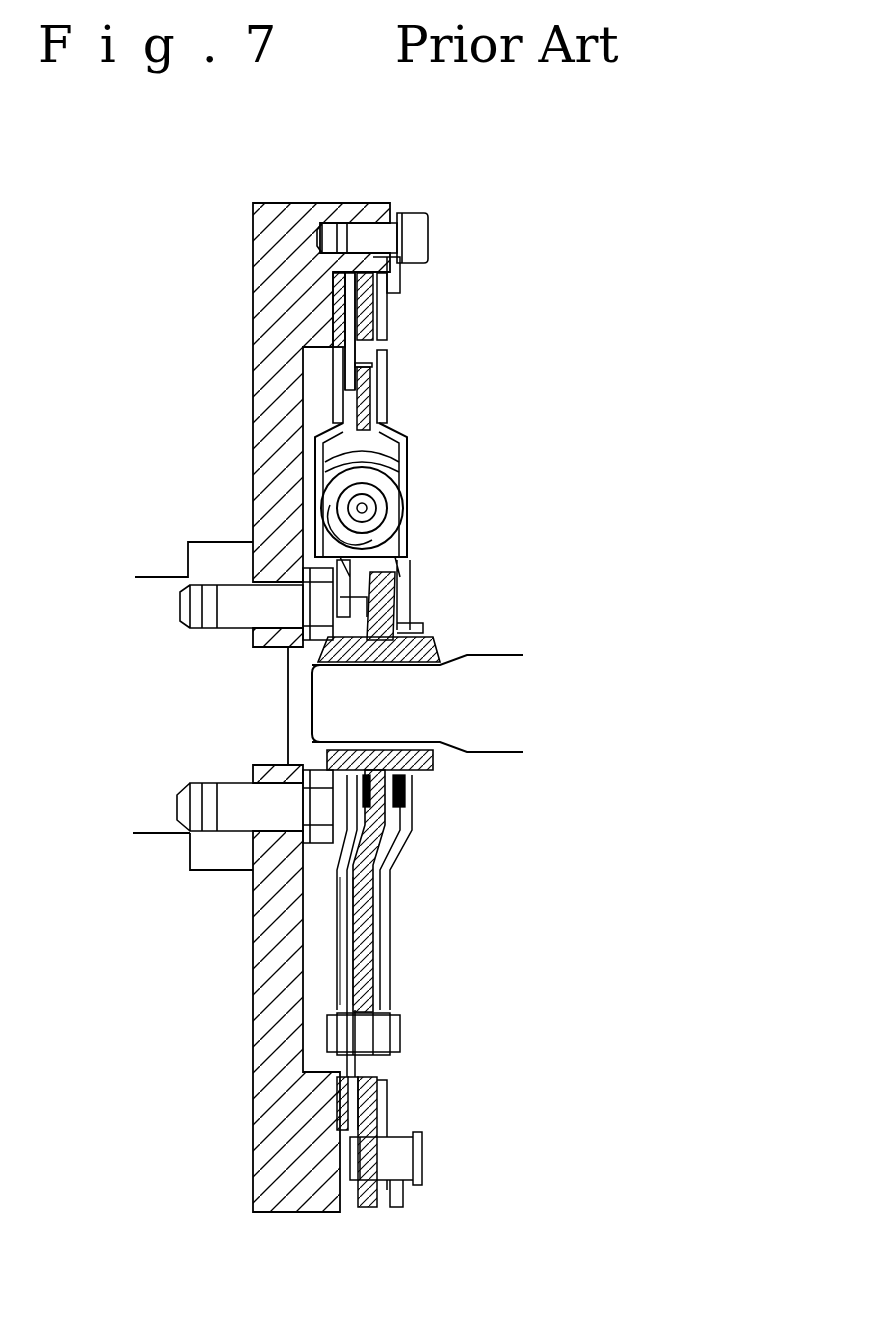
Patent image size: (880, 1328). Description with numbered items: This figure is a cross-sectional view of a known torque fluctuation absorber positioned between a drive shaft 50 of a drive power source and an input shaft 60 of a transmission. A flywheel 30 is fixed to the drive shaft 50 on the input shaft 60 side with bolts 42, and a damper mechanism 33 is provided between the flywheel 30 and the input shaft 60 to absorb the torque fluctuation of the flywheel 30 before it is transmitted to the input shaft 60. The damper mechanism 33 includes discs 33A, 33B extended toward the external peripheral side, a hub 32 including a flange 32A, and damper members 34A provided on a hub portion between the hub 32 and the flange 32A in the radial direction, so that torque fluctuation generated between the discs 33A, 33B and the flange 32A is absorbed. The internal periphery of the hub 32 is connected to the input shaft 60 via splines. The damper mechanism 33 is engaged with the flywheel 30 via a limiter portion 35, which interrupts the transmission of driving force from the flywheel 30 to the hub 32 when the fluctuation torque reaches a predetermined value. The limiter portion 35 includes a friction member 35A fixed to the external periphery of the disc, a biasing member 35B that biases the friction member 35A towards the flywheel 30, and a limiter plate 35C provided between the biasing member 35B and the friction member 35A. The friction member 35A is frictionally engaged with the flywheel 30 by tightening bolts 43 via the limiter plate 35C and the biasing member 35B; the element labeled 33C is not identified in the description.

The flywheel 30 is at (280, 265).
The bolts 43 is at (417, 240).
The limiter plate 35C is at (367, 290).
The limiter portion 35 is at (403, 307).
The biasing member 35B is at (379, 320).
The friction member 35A is at (345, 303).
The plate portion of arm 33C is at (345, 367).
The disc 33B is at (360, 397).
The damper mechanism 33 is at (400, 395).
The disc 33A is at (387, 407).
The damper member 34A is at (393, 517).
The drive shaft 50 is at (153, 595).
The input shaft 60 is at (490, 682).
The hub 32 is at (420, 757).
The flange 32A is at (363, 938).
The bolts 42 is at (327, 813).